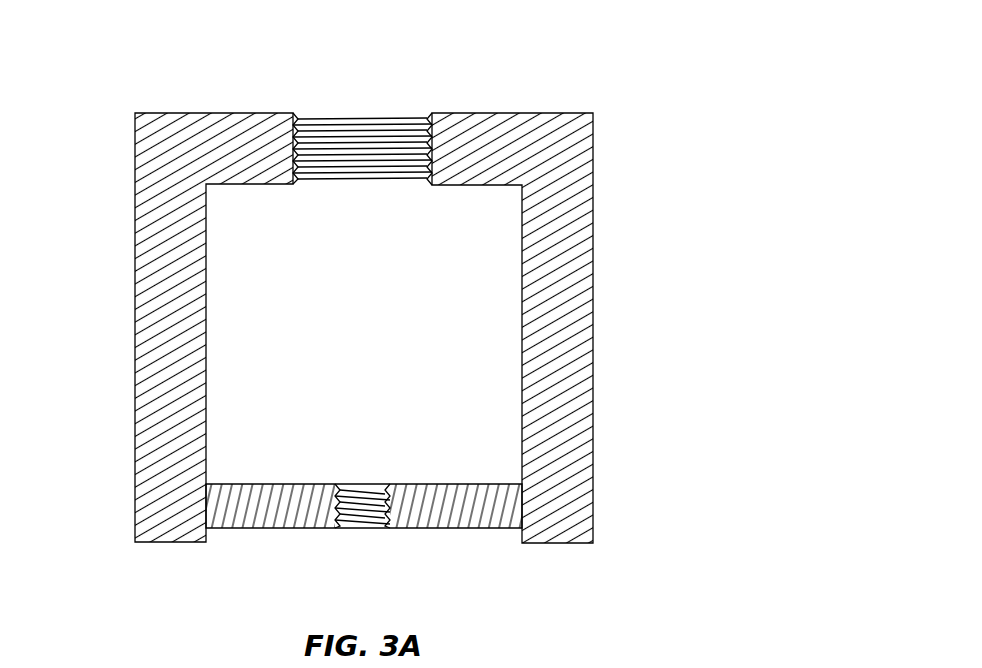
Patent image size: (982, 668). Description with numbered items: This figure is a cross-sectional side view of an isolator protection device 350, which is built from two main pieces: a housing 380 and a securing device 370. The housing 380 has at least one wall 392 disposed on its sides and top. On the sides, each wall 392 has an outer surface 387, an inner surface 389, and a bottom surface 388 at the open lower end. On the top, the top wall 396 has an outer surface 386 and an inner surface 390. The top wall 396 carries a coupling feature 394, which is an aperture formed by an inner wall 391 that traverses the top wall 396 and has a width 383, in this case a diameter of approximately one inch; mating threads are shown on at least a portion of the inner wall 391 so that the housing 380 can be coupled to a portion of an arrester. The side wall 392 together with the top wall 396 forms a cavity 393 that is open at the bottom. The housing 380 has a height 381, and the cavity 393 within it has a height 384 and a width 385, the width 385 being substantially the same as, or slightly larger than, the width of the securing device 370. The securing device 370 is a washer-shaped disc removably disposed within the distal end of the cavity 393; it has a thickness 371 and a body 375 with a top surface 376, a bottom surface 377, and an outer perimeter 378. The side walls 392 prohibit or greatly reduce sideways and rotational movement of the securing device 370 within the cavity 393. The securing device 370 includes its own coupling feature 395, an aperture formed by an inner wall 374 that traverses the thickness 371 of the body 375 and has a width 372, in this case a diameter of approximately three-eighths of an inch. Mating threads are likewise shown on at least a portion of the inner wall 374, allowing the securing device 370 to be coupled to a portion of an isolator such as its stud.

The isolator protection device 350 is at (722, 50).
The housing 380 is at (168, 110).
The top wall 396 is at (238, 130).
The width 383 is at (293, 65).
The outer surface 386 is at (512, 113).
The inner surface 390 is at (228, 186).
The inner wall 391 is at (292, 154).
The coupling feature 394 is at (386, 176).
The inner surface 389 is at (207, 236).
The outer surface 387 is at (135, 330).
The width 385 is at (206, 305).
The cavity 393 is at (344, 363).
The wall 392 is at (150, 418).
The top surface 376 is at (263, 484).
The inner wall 374 is at (347, 500).
The width 372 is at (412, 452).
The securing device 370 is at (479, 532).
The coupling feature 395 is at (363, 520).
The body 375 is at (278, 521).
The bottom surface 377 is at (425, 531).
The outer perimeter 378 is at (522, 500).
The bottom surface 388 is at (158, 543).
The thickness 371 is at (644, 543).
The height 384 is at (522, 185).
The height 381 is at (593, 113).